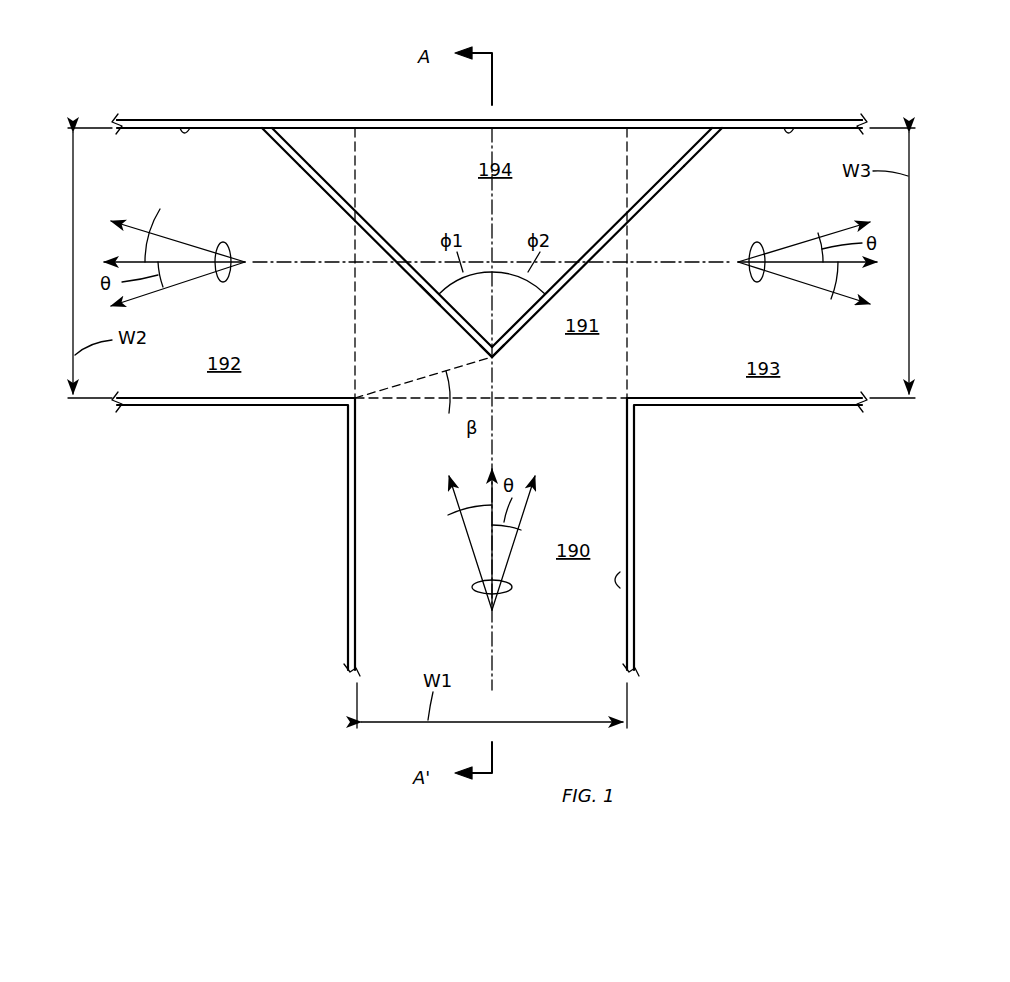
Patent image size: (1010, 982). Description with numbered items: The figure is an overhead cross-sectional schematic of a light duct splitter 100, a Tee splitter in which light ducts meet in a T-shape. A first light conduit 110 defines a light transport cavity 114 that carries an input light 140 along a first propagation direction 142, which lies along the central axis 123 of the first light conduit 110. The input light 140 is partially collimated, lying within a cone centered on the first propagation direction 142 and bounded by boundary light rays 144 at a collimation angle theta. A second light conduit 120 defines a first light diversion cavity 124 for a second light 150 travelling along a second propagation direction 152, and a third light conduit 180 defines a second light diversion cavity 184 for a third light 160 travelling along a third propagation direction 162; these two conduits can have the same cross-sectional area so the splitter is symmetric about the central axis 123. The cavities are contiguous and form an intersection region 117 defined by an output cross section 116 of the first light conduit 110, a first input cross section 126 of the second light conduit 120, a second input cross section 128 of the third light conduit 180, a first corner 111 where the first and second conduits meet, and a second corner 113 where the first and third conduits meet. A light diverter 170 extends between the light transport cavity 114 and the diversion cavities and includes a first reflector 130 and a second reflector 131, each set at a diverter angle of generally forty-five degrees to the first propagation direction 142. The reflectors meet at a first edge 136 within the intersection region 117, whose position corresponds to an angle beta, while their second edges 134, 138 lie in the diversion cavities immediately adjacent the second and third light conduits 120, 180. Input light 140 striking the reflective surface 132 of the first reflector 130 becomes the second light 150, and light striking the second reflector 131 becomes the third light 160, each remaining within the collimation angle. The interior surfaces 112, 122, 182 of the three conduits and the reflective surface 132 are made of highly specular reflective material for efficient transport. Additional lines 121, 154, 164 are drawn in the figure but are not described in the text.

The light duct splitter 100 is at (917, 102).
The first light conduit 110 is at (634, 630).
The first corner 111 is at (352, 396).
The interior surface 112 is at (614, 580).
The second corner 113 is at (630, 396).
The light transport cavity 114 is at (612, 520).
The output cross section 116 is at (546, 402).
The intersection region 117 is at (394, 138).
The second light conduit 120 is at (127, 124).
The horizontal center axis 121 is at (666, 258).
The interior surface 122 is at (186, 128).
The central axis 123 is at (494, 640).
The first light diversion cavity 124 is at (225, 140).
The first input cross section 126 is at (355, 334).
The second input cross section 128 is at (627, 352).
The first reflector 130 is at (372, 232).
The second reflector 131 is at (606, 226).
The reflective surface 132 is at (413, 283).
The second edge 134 is at (265, 128).
The first edge 136 is at (493, 358).
The second edge 138 is at (718, 128).
The input light 140 is at (477, 590).
The first propagation direction 142 is at (488, 506).
The boundary light rays 144 is at (470, 548).
The second light 150 is at (229, 244).
The second propagation direction 152 is at (154, 225).
The left input beam ray 154 is at (183, 240).
The third light 160 is at (753, 283).
The third propagation direction 162 is at (831, 300).
The right input beam ray 164 is at (797, 287).
The light diverter 170 is at (534, 106).
The third light conduit 180 is at (847, 122).
The interior surface 182 is at (790, 128).
The second light diversion cavity 184 is at (742, 140).